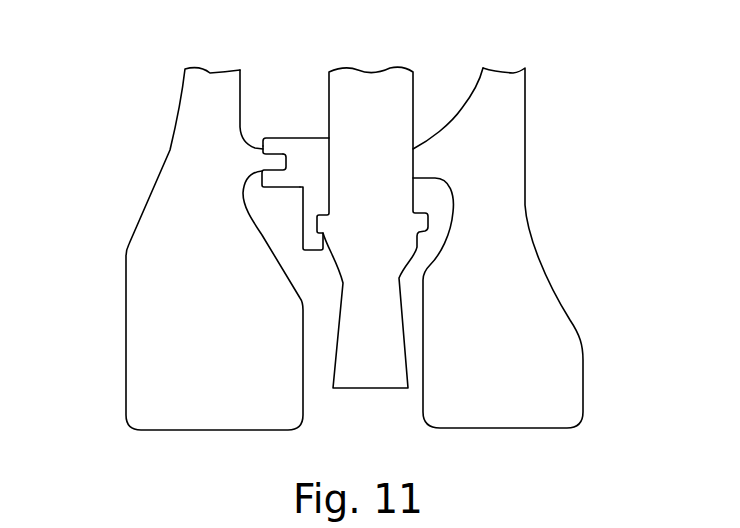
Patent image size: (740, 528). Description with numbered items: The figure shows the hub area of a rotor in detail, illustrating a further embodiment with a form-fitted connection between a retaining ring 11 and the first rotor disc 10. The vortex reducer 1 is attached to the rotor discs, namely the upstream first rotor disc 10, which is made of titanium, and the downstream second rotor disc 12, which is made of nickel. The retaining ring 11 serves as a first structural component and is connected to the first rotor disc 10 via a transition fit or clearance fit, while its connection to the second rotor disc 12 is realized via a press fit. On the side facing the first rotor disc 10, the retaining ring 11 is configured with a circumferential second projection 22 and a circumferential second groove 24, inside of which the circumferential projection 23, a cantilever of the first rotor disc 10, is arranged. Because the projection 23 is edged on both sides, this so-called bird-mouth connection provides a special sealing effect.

The vortex reducer 1 is at (370, 373).
The first rotor disc 10 is at (145, 357).
The retaining ring 11 is at (309, 183).
The second rotor disc 12 is at (563, 357).
The second projection 22 is at (292, 150).
The projection 23 is at (268, 142).
The second groove 24 is at (300, 141).